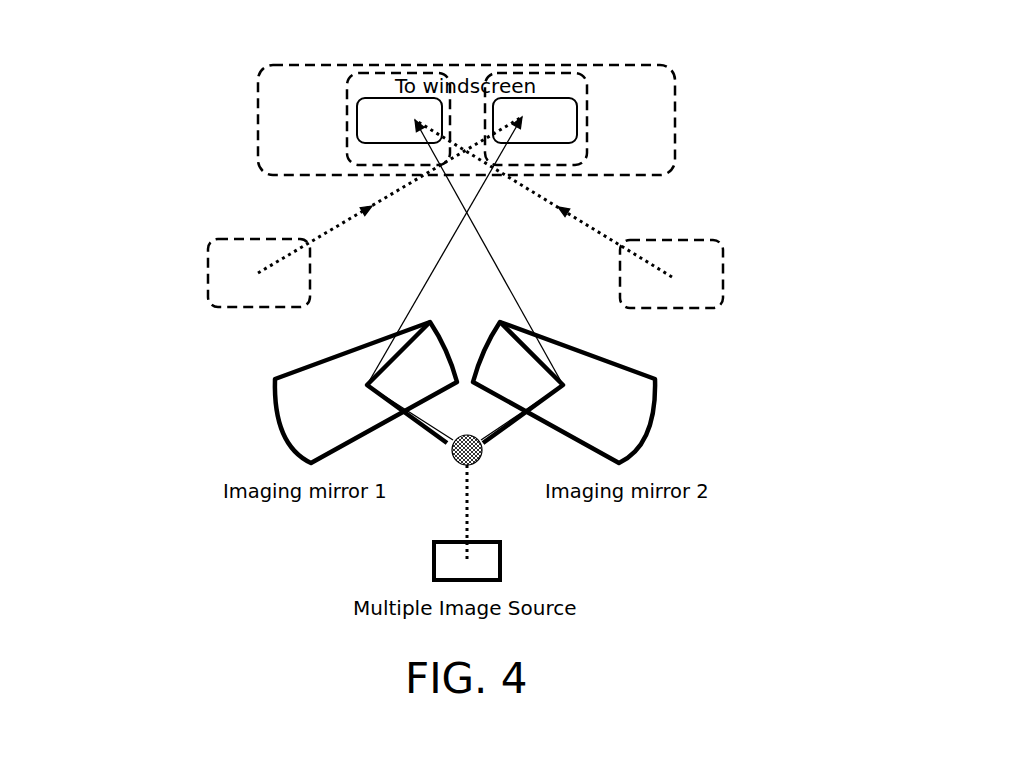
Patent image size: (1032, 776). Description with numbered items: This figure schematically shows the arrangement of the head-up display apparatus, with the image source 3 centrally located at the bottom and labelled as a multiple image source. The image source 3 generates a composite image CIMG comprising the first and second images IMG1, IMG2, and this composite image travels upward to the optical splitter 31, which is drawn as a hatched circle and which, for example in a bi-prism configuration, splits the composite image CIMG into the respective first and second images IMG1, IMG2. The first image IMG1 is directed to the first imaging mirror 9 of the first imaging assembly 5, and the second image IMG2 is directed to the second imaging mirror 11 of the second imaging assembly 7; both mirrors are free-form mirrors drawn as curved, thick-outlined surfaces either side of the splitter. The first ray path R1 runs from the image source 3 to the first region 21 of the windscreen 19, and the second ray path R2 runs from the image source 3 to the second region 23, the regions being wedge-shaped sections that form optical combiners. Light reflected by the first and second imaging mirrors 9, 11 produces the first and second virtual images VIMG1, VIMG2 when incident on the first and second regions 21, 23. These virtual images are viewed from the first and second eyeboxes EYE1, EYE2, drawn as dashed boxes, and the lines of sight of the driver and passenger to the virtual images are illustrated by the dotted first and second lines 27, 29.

The image source 3 is at (488, 564).
The first imaging assembly 5 is at (619, 376).
The second imaging assembly 7 is at (312, 377).
The first imaging mirror 9 is at (603, 385).
The second imaging mirror 11 is at (330, 385).
The windscreen 19 is at (272, 150).
The first region 21 is at (385, 108).
The second region 23 is at (548, 108).
The first line 27 is at (605, 237).
The second line 29 is at (323, 235).
The optical splitter 31 is at (482, 452).
The first virtual image VIMG1 is at (375, 122).
The second virtual image VIMG2 is at (557, 122).
The first eyebox EYE1 is at (700, 258).
The second eyebox EYE2 is at (235, 260).
The first ray path R1 is at (505, 279).
The second ray path R2 is at (428, 278).
The first image IMG1 is at (416, 428).
The second image IMG2 is at (521, 426).
The composite image CIMG is at (455, 519).